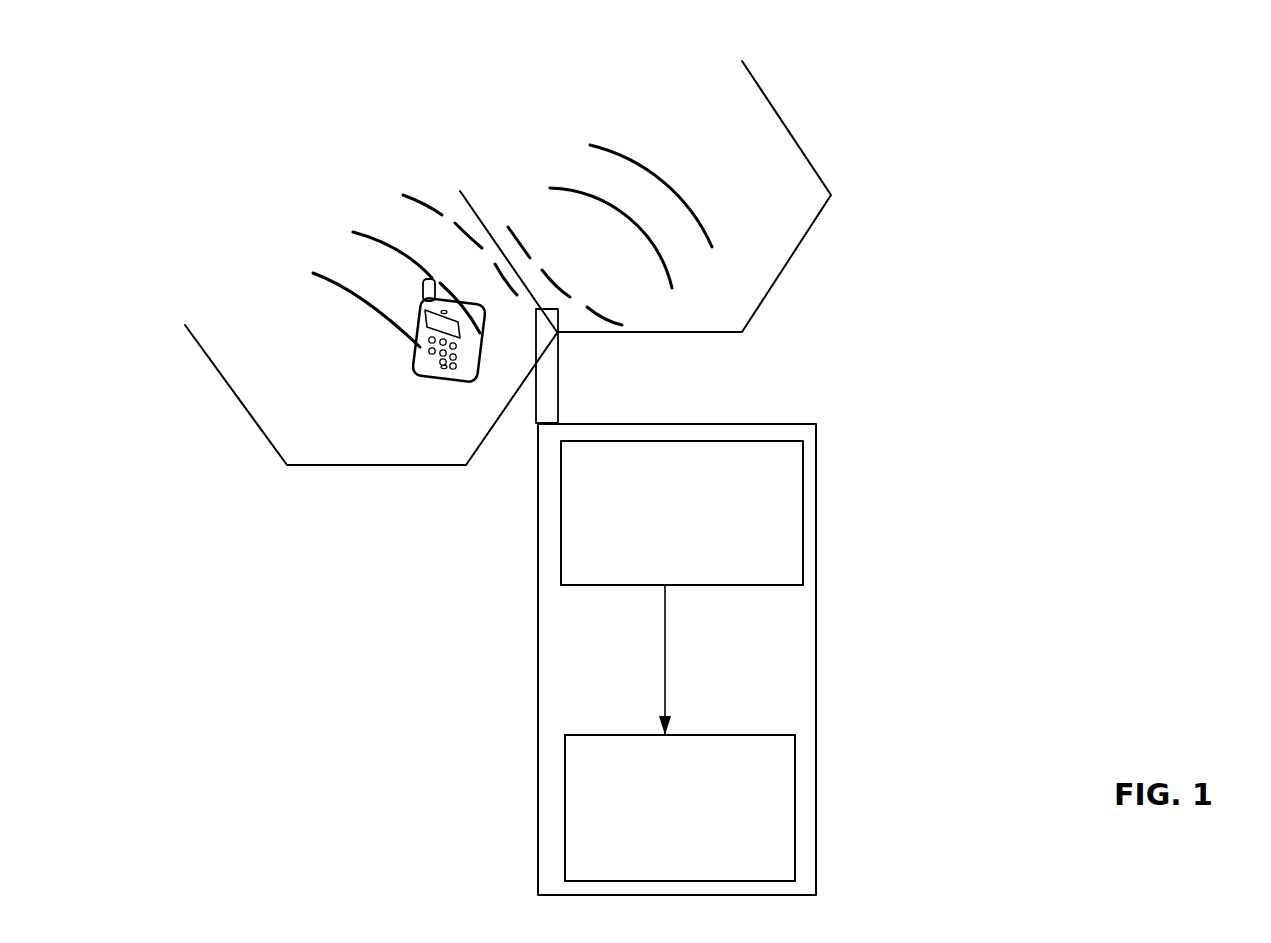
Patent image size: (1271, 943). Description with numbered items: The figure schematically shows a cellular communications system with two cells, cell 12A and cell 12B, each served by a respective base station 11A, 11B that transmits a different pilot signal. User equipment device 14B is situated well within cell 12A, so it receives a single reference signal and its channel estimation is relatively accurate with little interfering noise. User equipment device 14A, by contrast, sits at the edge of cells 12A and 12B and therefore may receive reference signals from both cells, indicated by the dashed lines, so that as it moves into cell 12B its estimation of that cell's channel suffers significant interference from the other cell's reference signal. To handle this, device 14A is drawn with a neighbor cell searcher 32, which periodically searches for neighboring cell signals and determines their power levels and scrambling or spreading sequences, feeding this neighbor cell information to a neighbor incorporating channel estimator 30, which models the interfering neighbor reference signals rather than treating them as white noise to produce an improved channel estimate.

The cell 12A is at (244, 408).
The cell 12B is at (800, 143).
The base station 11A is at (367, 323).
The base station 11B is at (672, 188).
The user equipment device 14B is at (448, 377).
The user equipment device 14A is at (538, 655).
The neighbor cell searcher 32 is at (808, 518).
The neighbor incorporating channel estimator 30 is at (800, 818).